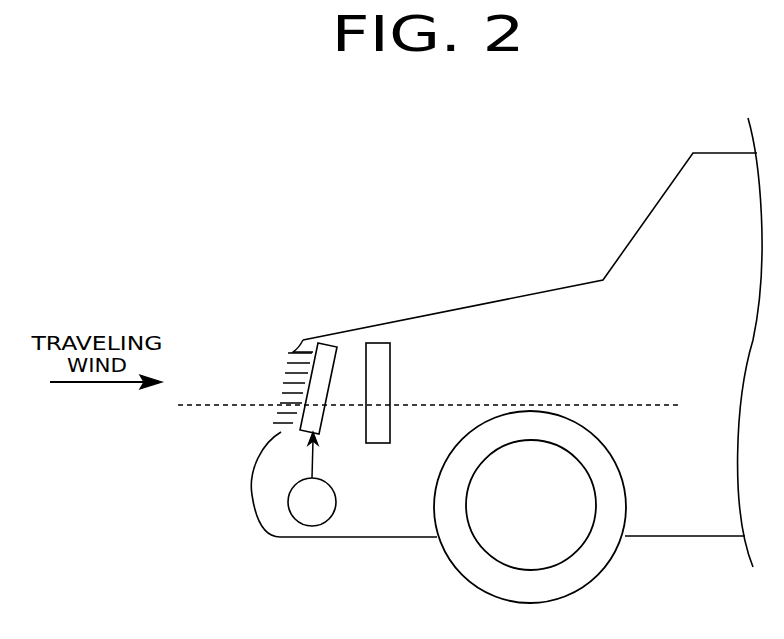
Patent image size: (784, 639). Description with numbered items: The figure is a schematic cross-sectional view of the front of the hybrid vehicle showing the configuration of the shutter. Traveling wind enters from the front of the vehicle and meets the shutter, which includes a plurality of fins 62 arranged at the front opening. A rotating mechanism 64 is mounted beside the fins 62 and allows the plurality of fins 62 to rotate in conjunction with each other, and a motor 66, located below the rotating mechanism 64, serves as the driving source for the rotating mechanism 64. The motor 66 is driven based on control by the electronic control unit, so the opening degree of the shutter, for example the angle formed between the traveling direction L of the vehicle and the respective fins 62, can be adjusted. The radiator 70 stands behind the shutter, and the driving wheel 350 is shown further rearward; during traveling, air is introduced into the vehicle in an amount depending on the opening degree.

The fins 62 is at (299, 339).
The rotating mechanism 64 is at (330, 343).
The motor 66 is at (313, 526).
The radiator 70 is at (377, 343).
The driving wheel 350 is at (607, 565).
The traveling direction L is at (631, 402).